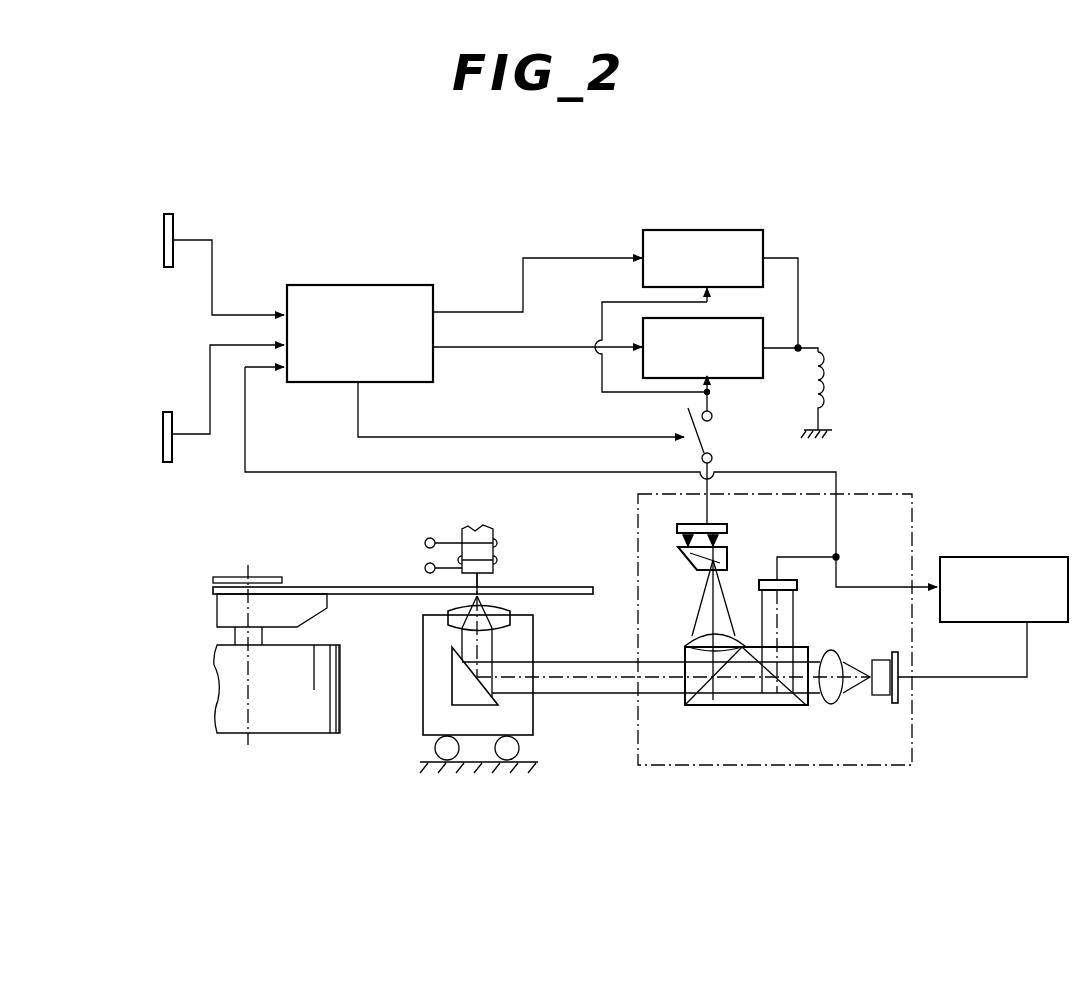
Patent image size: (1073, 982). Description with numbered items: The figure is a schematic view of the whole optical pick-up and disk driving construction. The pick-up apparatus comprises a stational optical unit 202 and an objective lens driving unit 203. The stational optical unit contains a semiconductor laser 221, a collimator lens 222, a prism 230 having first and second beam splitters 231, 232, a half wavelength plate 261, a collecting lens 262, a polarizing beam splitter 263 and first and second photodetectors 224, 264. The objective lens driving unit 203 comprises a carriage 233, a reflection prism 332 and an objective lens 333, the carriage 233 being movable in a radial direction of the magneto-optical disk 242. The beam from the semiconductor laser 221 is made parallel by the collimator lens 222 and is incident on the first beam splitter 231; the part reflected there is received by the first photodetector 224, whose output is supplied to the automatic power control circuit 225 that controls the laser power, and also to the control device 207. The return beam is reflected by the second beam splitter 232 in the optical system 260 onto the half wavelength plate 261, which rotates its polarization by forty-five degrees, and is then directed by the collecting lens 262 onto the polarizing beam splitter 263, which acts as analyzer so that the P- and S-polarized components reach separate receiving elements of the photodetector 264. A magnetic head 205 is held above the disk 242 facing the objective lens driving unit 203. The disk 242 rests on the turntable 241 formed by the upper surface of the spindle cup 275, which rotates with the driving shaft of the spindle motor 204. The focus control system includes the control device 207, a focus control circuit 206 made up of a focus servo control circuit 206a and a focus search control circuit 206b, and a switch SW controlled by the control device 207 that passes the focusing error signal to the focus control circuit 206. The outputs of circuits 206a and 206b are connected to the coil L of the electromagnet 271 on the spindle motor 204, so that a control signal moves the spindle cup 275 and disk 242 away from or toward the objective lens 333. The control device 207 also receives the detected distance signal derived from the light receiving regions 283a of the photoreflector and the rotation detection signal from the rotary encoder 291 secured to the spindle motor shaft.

The light receiving regions 283a is at (164, 214).
The rotary encoder 291 is at (163, 450).
The control device 207 is at (372, 285).
The focus control circuit 206 is at (690, 217).
The focus servo control circuit 206a is at (765, 240).
The focus search control circuit 206b is at (765, 323).
The switch SW is at (723, 458).
The electromagnet 271 is at (837, 348).
The stational optical unit 202 is at (912, 738).
The photodetector 264 is at (727, 527).
The polarizing beam splitter 263 is at (688, 562).
The collecting lens 262 is at (703, 622).
The half wavelength plate 261 is at (688, 643).
The optical system 260 is at (671, 626).
The prism 230 is at (740, 706).
The second beam splitter 232 is at (706, 706).
The first beam splitter 231 is at (780, 706).
The collimator lens 222 is at (838, 703).
The semiconductor laser 221 is at (893, 697).
The first photodetector 224 is at (797, 583).
The automatic power control circuit 225 is at (1032, 557).
The carriage 233 is at (532, 720).
The objective lens driving unit 203 is at (478, 783).
The objective lens 333 is at (455, 610).
The reflection prism 332 is at (460, 688).
The magnetic head 205 is at (462, 530).
The magneto-optical disk 242 is at (355, 587).
The turntable 241 is at (300, 587).
The spindle cup 275 is at (222, 605).
The spindle motor 204 is at (225, 706).